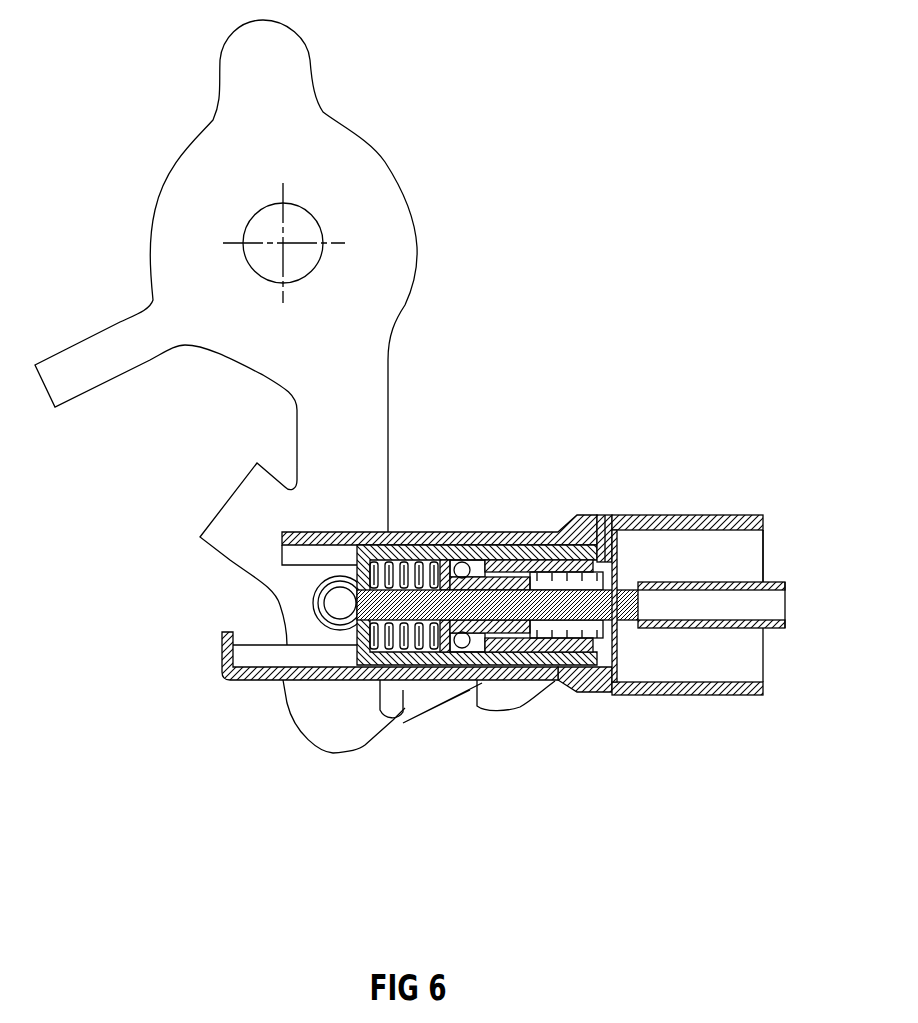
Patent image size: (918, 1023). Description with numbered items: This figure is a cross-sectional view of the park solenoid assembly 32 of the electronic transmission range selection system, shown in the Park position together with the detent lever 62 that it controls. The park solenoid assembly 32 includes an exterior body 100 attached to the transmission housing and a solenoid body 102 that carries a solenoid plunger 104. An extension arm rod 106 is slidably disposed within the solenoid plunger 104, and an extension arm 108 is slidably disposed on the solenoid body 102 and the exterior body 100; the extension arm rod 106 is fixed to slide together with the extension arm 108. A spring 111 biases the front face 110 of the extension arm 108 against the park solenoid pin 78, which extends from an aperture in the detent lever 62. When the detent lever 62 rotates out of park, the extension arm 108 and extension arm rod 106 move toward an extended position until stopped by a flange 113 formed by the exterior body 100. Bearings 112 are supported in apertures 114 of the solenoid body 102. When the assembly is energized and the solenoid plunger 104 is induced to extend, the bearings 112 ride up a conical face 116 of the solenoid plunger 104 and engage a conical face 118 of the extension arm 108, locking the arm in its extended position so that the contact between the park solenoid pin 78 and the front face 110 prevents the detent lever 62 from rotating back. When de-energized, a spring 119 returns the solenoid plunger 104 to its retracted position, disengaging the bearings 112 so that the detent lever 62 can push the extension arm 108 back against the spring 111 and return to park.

The detent lever 62 is at (367, 138).
The exterior body 100 is at (307, 532).
The front face 110 is at (355, 562).
The spring 111 is at (417, 567).
The extension arm 108 is at (443, 557).
The apertures 114 is at (465, 560).
The bearings 112 is at (458, 565).
The conical face 116 is at (492, 556).
The conical face 118 is at (602, 538).
The park solenoid assembly 32 is at (630, 500).
The solenoid body 102 is at (737, 518).
The extension arm rod 106 is at (638, 605).
The solenoid plunger 104 is at (780, 630).
The park solenoid pin 78 is at (322, 603).
The flange 113 is at (222, 648).
The spring 119 is at (573, 645).